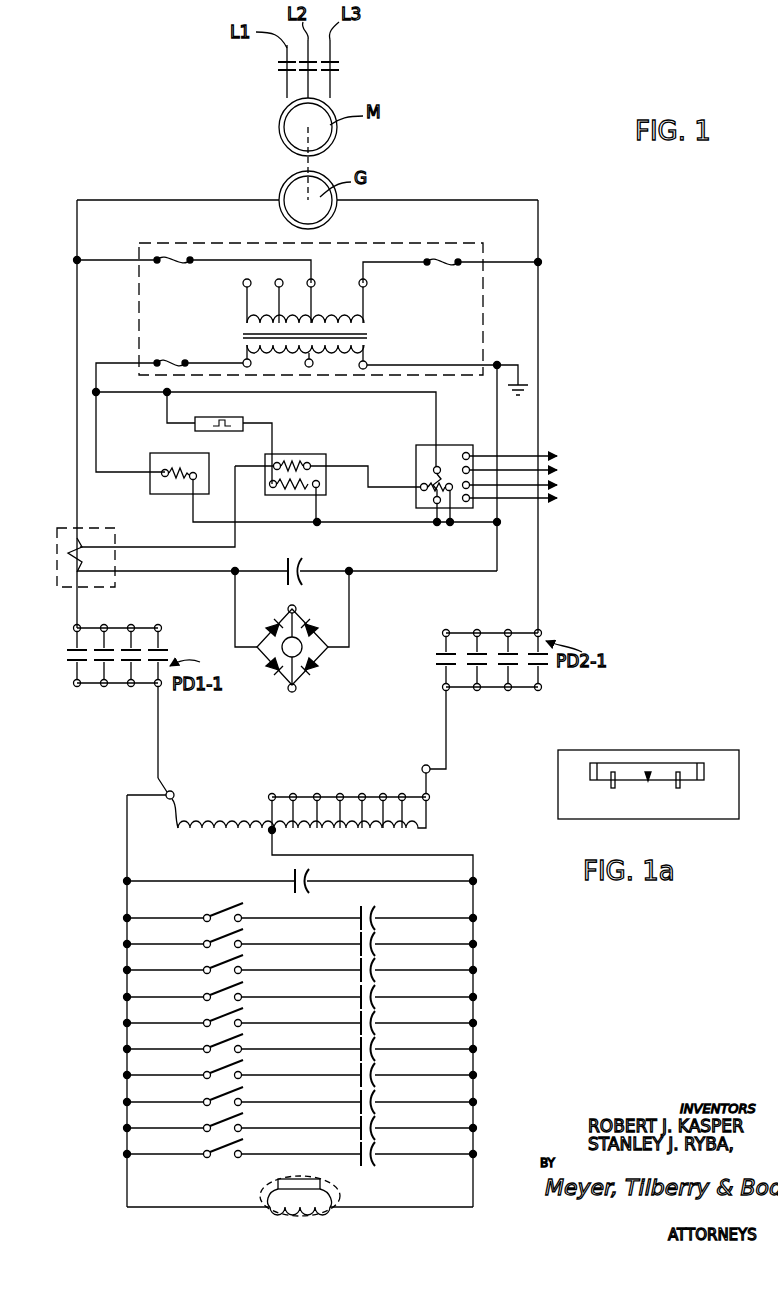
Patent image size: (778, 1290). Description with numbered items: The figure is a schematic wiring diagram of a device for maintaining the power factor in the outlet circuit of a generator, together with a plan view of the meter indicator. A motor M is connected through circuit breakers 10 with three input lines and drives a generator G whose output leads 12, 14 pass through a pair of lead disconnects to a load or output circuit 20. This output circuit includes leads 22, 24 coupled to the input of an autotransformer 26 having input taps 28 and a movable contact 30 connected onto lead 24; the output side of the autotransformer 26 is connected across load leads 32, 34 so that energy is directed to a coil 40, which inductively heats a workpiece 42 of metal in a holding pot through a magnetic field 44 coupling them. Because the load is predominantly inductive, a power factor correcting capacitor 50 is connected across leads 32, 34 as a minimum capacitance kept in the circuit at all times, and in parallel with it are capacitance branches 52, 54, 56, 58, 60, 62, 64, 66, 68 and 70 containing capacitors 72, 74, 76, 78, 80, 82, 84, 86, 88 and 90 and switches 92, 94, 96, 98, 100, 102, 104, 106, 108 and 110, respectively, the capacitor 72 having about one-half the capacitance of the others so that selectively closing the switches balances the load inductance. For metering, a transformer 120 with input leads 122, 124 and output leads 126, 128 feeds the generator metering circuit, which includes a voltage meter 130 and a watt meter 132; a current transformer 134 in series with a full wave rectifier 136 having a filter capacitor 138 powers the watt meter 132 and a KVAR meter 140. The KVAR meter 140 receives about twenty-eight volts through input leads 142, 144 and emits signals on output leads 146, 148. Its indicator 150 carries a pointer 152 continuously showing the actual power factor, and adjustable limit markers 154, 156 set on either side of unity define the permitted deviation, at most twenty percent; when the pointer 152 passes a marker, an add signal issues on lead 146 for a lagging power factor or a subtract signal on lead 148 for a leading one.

In FIG. 1, the circuit breakers 10 is at (338, 70).
In FIG. 1, the output lead 12 is at (77, 218).
In FIG. 1, the output lead 14 is at (538, 230).
In FIG. 1, the output circuit 20 is at (78, 790).
In FIG. 1, the lead 22 is at (158, 728).
In FIG. 1, the lead 24 is at (446, 730).
In FIG. 1, the autotransformer 26 is at (240, 818).
In FIG. 1, the input taps 28 is at (293, 793).
In FIG. 1, the movable contact 30 is at (430, 782).
In FIG. 1, the load lead 32 is at (127, 845).
In FIG. 1, the load lead 34 is at (400, 855).
In FIG. 1, the coil 40 is at (322, 1212).
In FIG. 1, the workpiece 42 is at (308, 1178).
In FIG. 1, the magnetic field 44 is at (336, 1193).
In FIG. 1, the power factor correcting capacitor 50 is at (302, 882).
In FIG. 1, the capacitance branch 52 is at (446, 918).
In FIG. 1, the capacitance branch 54 is at (446, 944).
In FIG. 1, the capacitance branch 56 is at (446, 970).
In FIG. 1, the capacitance branch 58 is at (446, 997).
In FIG. 1, the capacitance branch 60 is at (446, 1023).
In FIG. 1, the capacitance branch 62 is at (446, 1049).
In FIG. 1, the capacitance branch 64 is at (446, 1075).
In FIG. 1, the capacitance branch 66 is at (446, 1102).
In FIG. 1, the capacitance branch 68 is at (446, 1128).
In FIG. 1, the capacitance branch 70 is at (446, 1154).
In FIG. 1, the capacitor 72 is at (360, 914).
In FIG. 1, the capacitor 74 is at (360, 942).
In FIG. 1, the capacitor 76 is at (360, 968).
In FIG. 1, the capacitor 78 is at (360, 995).
In FIG. 1, the capacitor 80 is at (360, 1021).
In FIG. 1, the capacitor 82 is at (360, 1047).
In FIG. 1, the capacitor 84 is at (360, 1073).
In FIG. 1, the capacitor 86 is at (360, 1100).
In FIG. 1, the capacitor 88 is at (360, 1126).
In FIG. 1, the capacitor 90 is at (360, 1152).
In FIG. 1, the switch 92 is at (226, 906).
In FIG. 1, the switch 94 is at (226, 936).
In FIG. 1, the switch 96 is at (226, 962).
In FIG. 1, the switch 98 is at (226, 989).
In FIG. 1, the switch 100 is at (226, 1015).
In FIG. 1, the switch 102 is at (226, 1041).
In FIG. 1, the switch 104 is at (226, 1067).
In FIG. 1, the switch 106 is at (226, 1094).
In FIG. 1, the switch 108 is at (226, 1120).
In FIG. 1, the switch 110 is at (226, 1146).
In FIG. 1, the transformer 120 is at (372, 330).
In FIG. 1, the input lead 122 is at (240, 258).
In FIG. 1, the input lead 124 is at (390, 258).
In FIG. 1, the output lead 126 is at (96, 362).
In FIG. 1, the output lead 128 is at (425, 364).
In FIG. 1, the voltage meter 130 is at (172, 453).
In FIG. 1, the watt meter 132 is at (300, 454).
In FIG. 1, the current transformer 134 is at (80, 537).
In FIG. 1, the full wave rectifier 136 is at (320, 626).
In FIG. 1, the filter capacitor 138 is at (306, 566).
In FIG. 1, the KVAR meter 140 is at (455, 445).
In FIG. 1, the input lead 142 is at (556, 484).
In FIG. 1, the input lead 144 is at (553, 498).
In FIG. 1, the output lead 146 is at (548, 455).
In FIG. 1, the output lead 148 is at (557, 470).
In FIG. 1a, the indicator 150 is at (680, 748).
In FIG. 1a, the pointer 152 is at (650, 775).
In FIG. 1a, the limit marker 154 is at (620, 770).
In FIG. 1a, the limit marker 156 is at (690, 772).